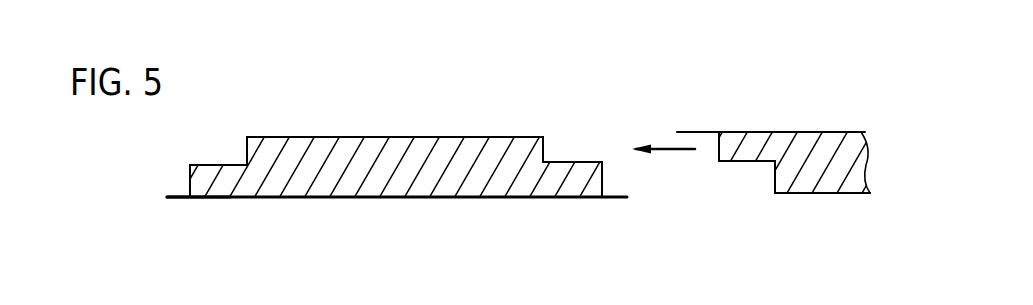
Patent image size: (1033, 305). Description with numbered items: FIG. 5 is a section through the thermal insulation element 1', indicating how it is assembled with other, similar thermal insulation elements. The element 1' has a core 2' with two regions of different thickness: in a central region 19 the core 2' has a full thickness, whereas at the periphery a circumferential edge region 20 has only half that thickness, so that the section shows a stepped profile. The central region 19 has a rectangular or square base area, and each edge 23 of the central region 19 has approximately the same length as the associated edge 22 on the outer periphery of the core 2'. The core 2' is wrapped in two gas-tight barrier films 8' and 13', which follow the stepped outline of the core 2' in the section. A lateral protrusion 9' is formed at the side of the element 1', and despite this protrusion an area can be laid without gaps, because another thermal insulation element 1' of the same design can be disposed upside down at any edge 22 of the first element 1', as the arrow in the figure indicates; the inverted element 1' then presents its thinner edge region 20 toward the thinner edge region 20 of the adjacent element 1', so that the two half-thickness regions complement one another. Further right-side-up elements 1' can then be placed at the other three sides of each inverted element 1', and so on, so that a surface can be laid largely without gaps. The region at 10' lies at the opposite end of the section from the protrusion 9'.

The thermal insulation element 1' is at (530, 106).
The core 2' is at (528, 198).
The gas-tight barrier film 8' is at (516, 158).
The lateral protrusion 9' is at (198, 238).
The second end of base 10' is at (585, 208).
The gas-tight barrier film 13' is at (558, 159).
The central region 19 is at (441, 150).
The circumferential edge region 20 is at (225, 182).
The edge 22 is at (190, 193).
The edge of the central region 23 is at (246, 158).